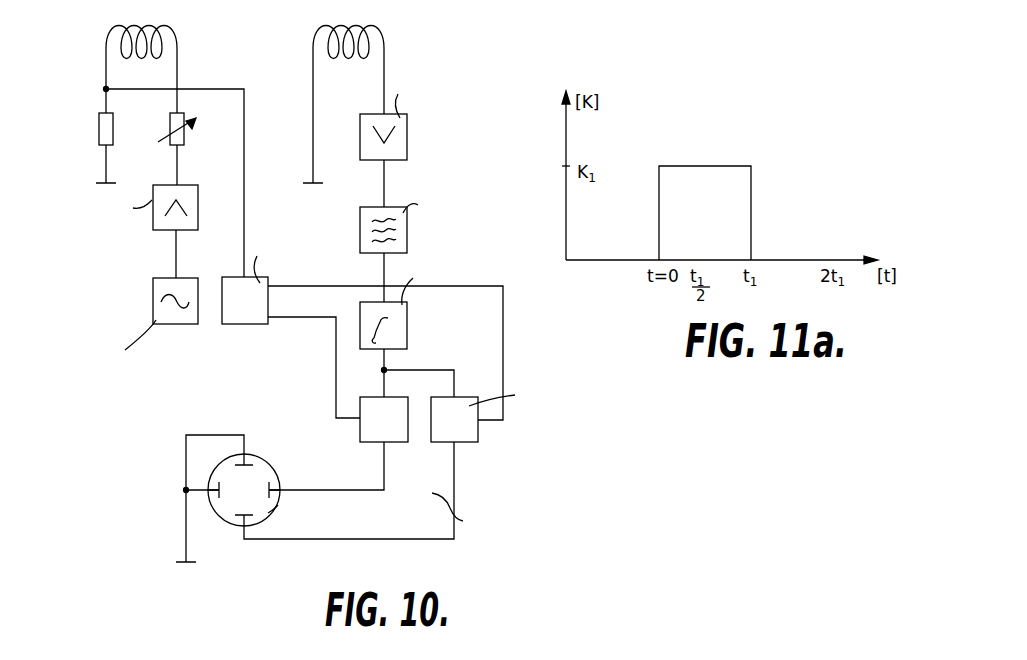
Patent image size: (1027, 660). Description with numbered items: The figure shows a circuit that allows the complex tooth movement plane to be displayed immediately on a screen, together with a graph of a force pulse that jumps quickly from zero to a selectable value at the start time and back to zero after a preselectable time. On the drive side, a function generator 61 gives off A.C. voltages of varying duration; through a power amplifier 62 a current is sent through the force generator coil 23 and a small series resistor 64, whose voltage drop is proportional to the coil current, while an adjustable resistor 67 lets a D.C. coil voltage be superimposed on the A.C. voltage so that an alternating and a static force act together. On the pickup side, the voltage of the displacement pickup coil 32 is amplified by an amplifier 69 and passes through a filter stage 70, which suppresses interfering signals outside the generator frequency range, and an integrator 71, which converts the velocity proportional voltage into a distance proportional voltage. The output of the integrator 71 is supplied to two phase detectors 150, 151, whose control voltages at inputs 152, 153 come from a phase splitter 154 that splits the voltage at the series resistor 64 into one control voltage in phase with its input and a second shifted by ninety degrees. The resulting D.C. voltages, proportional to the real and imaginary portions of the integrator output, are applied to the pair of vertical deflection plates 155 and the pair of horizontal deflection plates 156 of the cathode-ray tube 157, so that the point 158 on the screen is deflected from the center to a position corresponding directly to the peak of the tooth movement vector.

The force generator coil 23 is at (180, 48).
The displacement pickup coil 32 is at (357, 57).
The function generator 61 is at (153, 302).
The power amplifier 62 is at (153, 222).
The series resistor 64 is at (113, 132).
The adjustable resistor 67 is at (184, 137).
The amplifier 69 is at (407, 145).
The filter stage 70 is at (407, 232).
The integrator 71 is at (407, 329).
The phase detector 150 is at (393, 430).
The phase detector 151 is at (465, 441).
The input 152 is at (362, 420).
The input 153 is at (478, 421).
The phase splitter 154 is at (246, 326).
The pair of vertical deflection plates 155 is at (240, 462).
The pair of horizontal deflection plates 156 is at (272, 487).
The cathode-ray tube 157 is at (278, 505).
The point 158 is at (262, 467).